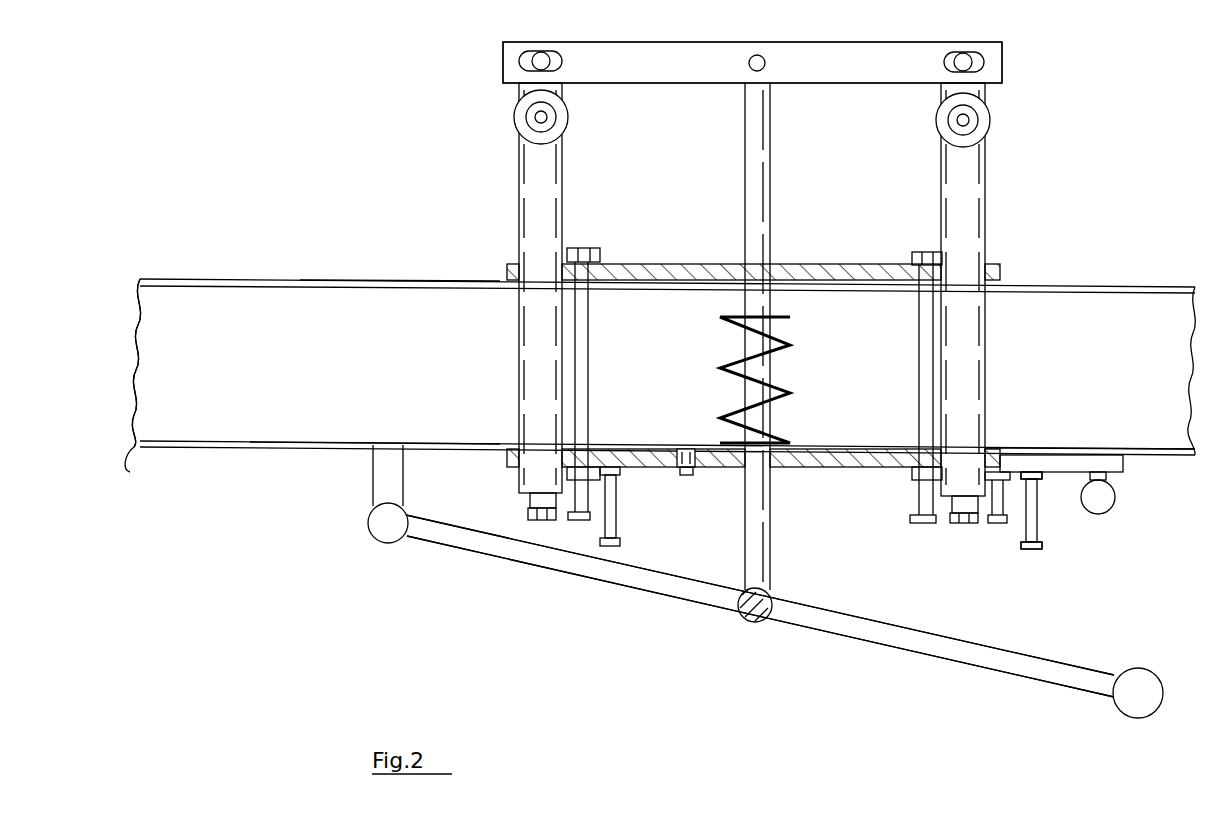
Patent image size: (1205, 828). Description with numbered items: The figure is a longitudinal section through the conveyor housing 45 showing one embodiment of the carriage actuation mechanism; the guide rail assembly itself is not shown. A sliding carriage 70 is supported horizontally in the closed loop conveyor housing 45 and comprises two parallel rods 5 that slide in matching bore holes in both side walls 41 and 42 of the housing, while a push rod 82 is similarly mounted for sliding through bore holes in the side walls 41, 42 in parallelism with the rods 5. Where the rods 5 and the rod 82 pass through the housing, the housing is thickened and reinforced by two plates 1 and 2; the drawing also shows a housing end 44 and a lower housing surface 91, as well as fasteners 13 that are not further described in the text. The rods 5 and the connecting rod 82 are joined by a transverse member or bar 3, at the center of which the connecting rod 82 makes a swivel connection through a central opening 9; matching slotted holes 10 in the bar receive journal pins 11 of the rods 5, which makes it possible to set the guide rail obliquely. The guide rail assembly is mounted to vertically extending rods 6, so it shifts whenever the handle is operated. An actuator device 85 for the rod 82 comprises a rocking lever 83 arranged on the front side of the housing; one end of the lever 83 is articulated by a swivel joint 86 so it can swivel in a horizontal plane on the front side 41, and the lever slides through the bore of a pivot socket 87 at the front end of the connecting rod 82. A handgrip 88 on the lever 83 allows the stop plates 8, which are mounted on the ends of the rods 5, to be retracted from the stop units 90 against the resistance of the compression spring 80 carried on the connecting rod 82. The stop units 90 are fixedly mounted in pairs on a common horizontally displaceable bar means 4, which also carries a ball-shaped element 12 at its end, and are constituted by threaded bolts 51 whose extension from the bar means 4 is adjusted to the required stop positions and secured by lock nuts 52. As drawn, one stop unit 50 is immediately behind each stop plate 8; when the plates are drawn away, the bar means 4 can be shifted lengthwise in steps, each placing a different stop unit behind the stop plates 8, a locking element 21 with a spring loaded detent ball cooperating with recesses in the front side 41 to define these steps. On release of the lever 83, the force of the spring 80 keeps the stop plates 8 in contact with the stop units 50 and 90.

The plate 1 is at (850, 470).
The plate 2 is at (818, 275).
The transverse member or bar 3 is at (856, 60).
The bar means 4 is at (1123, 462).
The rods 5 is at (518, 205).
The vertically extending rods 6 is at (563, 122).
The stop plate 8 is at (531, 500).
The hole 9 is at (757, 55).
The slotted holes 10 is at (546, 55).
The journal pins 11 is at (537, 55).
The ball stop 12 is at (1104, 500).
The bolt 13 is at (755, 315).
The locking element 21 is at (689, 477).
The side wall (front side) 41 is at (318, 450).
The side wall 42 is at (402, 283).
The beam end 44 is at (143, 378).
The conveyor housing 45 is at (330, 270).
The stop unit 50 is at (997, 540).
The threaded bolts 51 is at (1037, 552).
The lock nuts 52 is at (1036, 480).
The sliding carriage 70 is at (495, 152).
The compression spring 80 is at (782, 316).
The push rod / connecting rod 82 is at (771, 527).
The rocking lever 83 is at (1000, 668).
The actuator device 85 is at (858, 655).
The swivel joint 86 is at (383, 537).
The pivot socket 87 is at (750, 628).
The handgrip 88 is at (1134, 710).
The stop units 90 is at (618, 518).
The beam lower surface 91 is at (1082, 446).